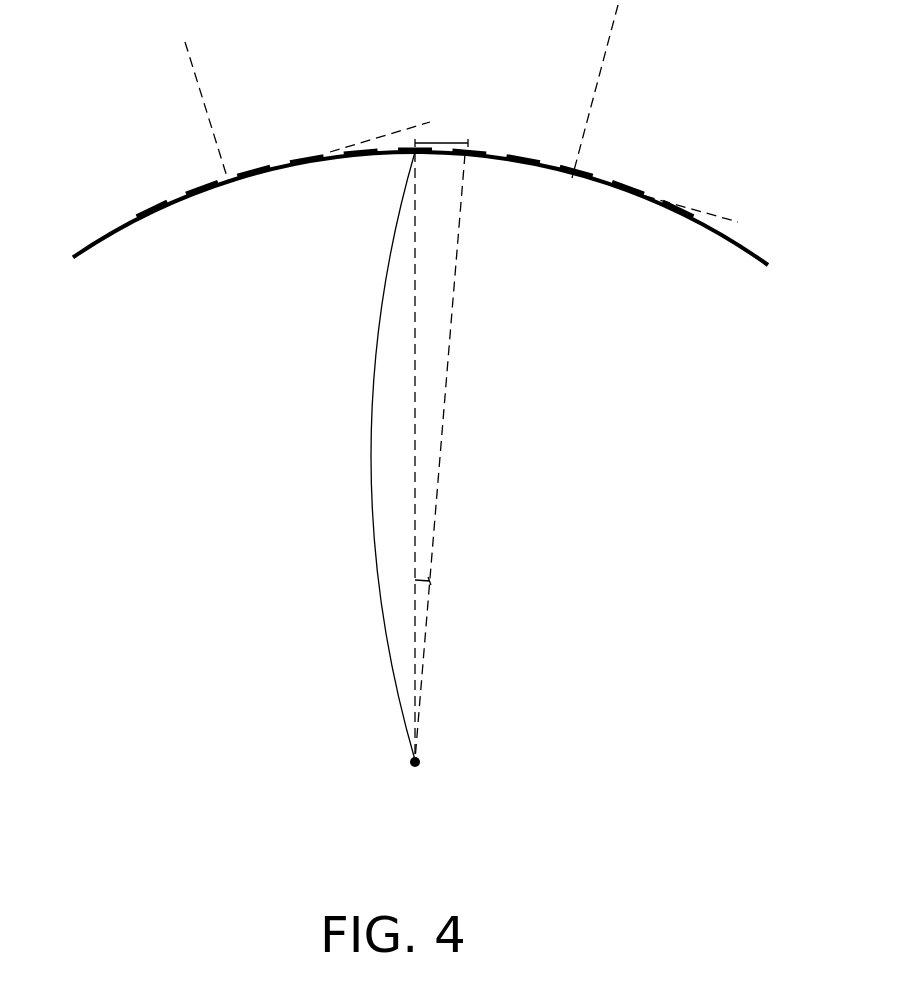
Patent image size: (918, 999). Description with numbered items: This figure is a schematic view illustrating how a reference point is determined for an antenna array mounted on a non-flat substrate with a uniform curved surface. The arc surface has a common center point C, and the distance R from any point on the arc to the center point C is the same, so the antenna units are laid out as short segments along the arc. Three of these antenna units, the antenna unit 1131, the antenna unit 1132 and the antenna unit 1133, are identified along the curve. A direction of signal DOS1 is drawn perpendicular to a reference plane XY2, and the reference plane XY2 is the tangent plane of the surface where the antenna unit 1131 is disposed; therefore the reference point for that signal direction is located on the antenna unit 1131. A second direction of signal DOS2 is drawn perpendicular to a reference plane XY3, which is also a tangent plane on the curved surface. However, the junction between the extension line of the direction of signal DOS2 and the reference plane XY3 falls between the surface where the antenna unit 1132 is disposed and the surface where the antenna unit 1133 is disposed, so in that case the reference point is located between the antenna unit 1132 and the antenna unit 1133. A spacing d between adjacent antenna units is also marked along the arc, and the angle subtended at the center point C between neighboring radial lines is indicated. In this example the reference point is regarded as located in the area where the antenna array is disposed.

The antenna unit 1131 is at (573, 177).
The antenna unit 1132 is at (207, 197).
The antenna unit 1133 is at (260, 180).
The direction of signal DOS1 is at (633, 91).
The direction of signal DOS2 is at (233, 105).
The reference plane XY2 is at (696, 199).
The reference plane XY3 is at (365, 132).
The segment spacing d is at (441, 132).
The distance R is at (388, 456).
The center point C is at (433, 772).